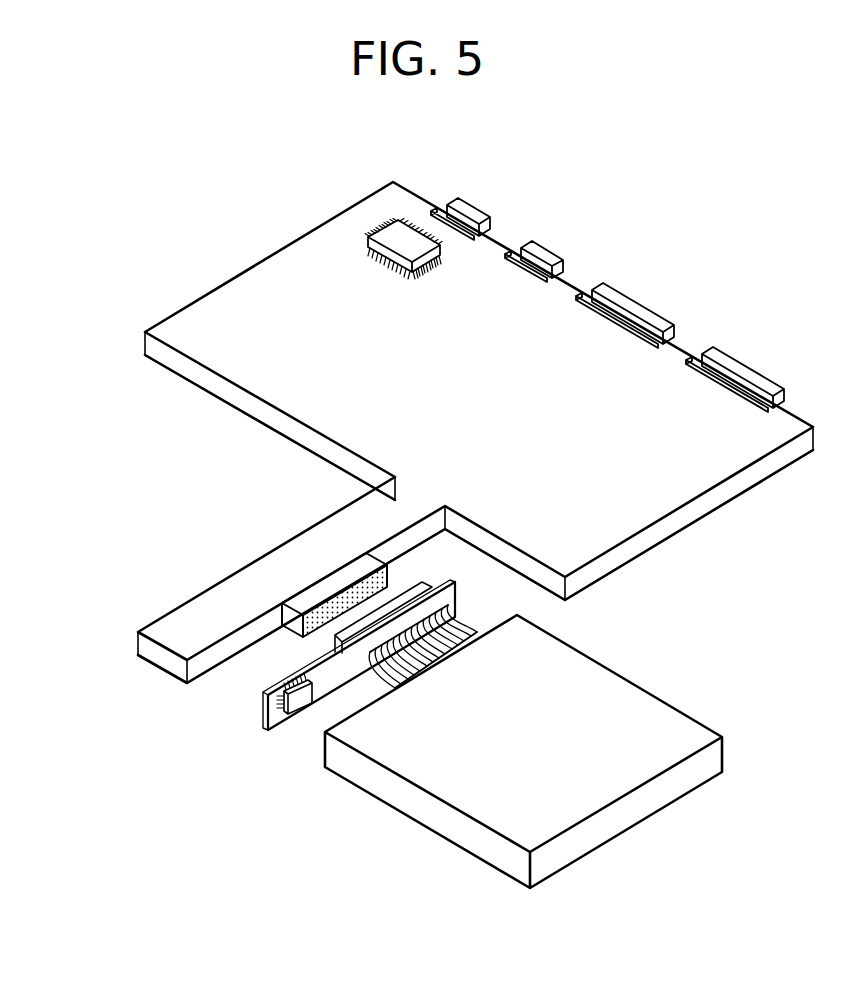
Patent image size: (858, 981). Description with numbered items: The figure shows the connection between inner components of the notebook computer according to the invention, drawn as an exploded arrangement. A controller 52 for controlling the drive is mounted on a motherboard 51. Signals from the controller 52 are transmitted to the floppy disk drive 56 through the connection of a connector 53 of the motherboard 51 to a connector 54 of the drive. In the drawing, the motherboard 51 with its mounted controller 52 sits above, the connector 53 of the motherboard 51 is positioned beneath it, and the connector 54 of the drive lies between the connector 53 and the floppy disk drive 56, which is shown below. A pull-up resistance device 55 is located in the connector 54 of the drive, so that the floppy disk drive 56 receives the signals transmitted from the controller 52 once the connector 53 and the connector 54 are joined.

The motherboard 51 is at (238, 396).
The controller 52 is at (398, 230).
The connector of the motherboard 53 is at (293, 622).
The connector of the drive 54 is at (266, 690).
The pull-up resistance device 55 is at (294, 720).
The floppy disk drive 56 is at (323, 752).